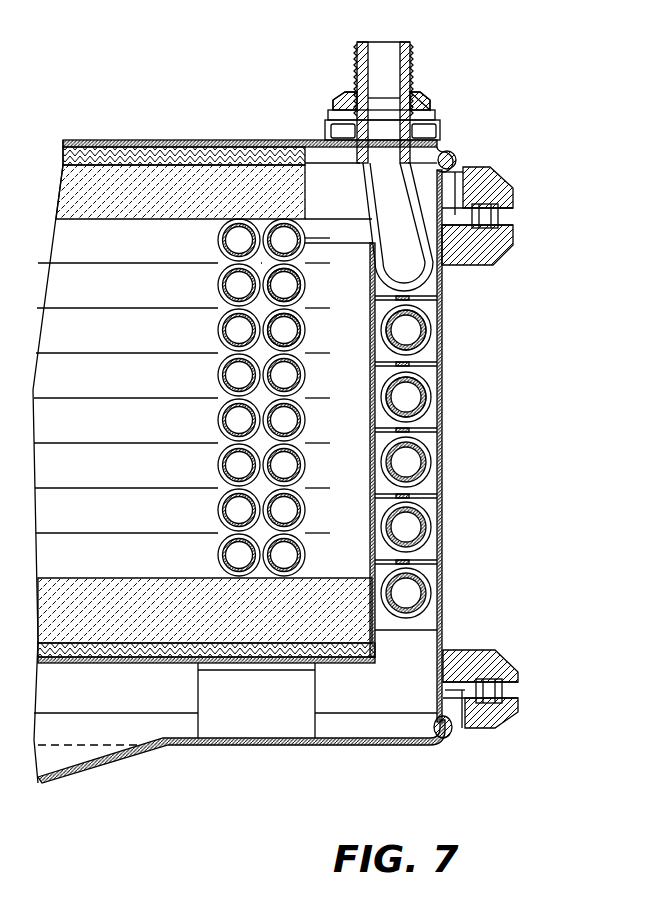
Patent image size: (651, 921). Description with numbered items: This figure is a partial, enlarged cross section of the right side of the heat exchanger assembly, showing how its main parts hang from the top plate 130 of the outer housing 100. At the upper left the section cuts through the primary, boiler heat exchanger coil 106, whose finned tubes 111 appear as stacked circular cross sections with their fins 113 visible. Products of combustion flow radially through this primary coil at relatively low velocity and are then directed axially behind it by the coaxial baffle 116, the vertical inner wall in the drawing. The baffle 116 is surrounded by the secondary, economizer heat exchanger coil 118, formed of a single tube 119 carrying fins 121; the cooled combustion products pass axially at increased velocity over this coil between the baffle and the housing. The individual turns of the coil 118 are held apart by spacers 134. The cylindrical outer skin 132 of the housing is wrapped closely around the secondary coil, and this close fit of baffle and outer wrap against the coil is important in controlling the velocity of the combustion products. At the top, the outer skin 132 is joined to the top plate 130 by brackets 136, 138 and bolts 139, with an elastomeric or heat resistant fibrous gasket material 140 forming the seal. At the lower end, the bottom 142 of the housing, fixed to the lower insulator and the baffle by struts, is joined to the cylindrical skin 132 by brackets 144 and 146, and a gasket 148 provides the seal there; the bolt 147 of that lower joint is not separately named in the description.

The outer housing 100 is at (524, 92).
The primary boiler heat exchanger coil 106 is at (302, 462).
The finned tubes 111 is at (300, 280).
The fins 113 is at (300, 315).
The baffle 116 is at (371, 483).
The secondary heat exchanger coil 118 is at (440, 540).
The single tube 119 is at (418, 380).
The fins 121 is at (431, 330).
The top plate 130 is at (412, 78).
The cylindrical outer skin 132 is at (441, 427).
The spacers 134 is at (415, 497).
The bracket 136 is at (514, 180).
The bracket 138 is at (499, 251).
The bolts 139 is at (506, 205).
The gasket material 140 is at (455, 158).
The bottom 142 is at (335, 748).
The bracket 144 is at (519, 674).
The bracket 146 is at (512, 719).
The bolt 147 is at (495, 655).
The gasket 148 is at (456, 735).